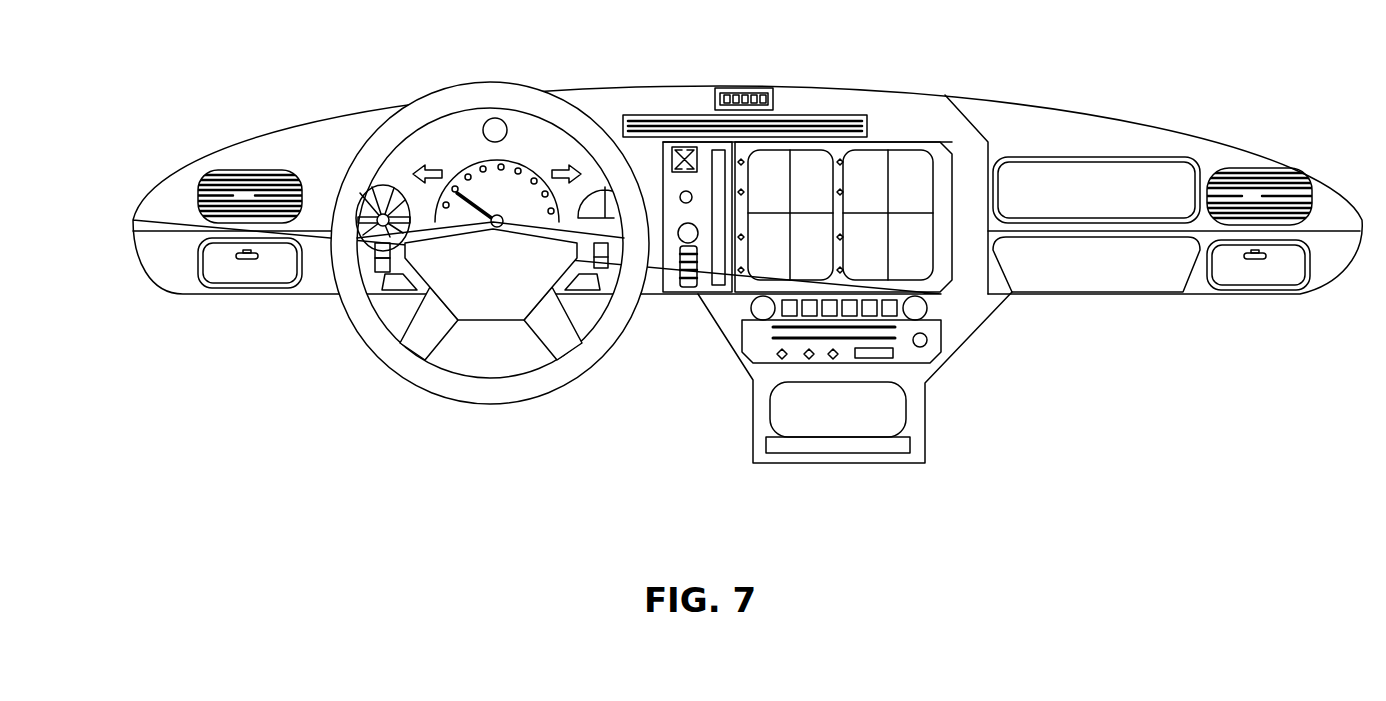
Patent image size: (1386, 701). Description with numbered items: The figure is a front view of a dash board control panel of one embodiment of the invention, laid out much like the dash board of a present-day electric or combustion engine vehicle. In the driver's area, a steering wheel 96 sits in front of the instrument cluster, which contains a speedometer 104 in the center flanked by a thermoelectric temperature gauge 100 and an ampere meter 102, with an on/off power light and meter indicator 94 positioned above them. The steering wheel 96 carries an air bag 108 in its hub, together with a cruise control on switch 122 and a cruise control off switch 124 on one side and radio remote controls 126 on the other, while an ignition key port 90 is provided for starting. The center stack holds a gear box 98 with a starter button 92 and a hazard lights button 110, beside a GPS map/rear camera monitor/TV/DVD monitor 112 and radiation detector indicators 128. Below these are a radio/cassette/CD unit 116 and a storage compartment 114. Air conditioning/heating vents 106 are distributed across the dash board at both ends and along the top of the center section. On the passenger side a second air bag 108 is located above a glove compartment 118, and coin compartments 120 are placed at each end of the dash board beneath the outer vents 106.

The ignition key port 90 is at (520, 325).
The starter button 92 is at (690, 192).
The on/off power light and meter indicator 94 is at (495, 127).
The steering wheel 96 is at (523, 100).
The gear box 98 is at (683, 270).
The thermoelectric temperature gauge 100 is at (382, 197).
The ampere meter 102 is at (405, 185).
The speedometer 104 is at (478, 190).
The air conditioning/heating vents 106 is at (217, 177).
The air bags 108 is at (487, 298).
The hazard lights button 110 is at (683, 150).
The GPS map/rear camera monitor/TV/DVD monitor 112 is at (782, 242).
The storage compartment 114 is at (812, 412).
The radio/cassette/CD unit 116 is at (838, 333).
The glove compartment 118 is at (1102, 278).
The coin compartment 120 is at (240, 275).
The cruise control on switch 122 is at (380, 253).
The cruise control off switch 124 is at (382, 266).
The radio remote controls 126 is at (603, 268).
The radiation detector indicators 128 is at (922, 258).